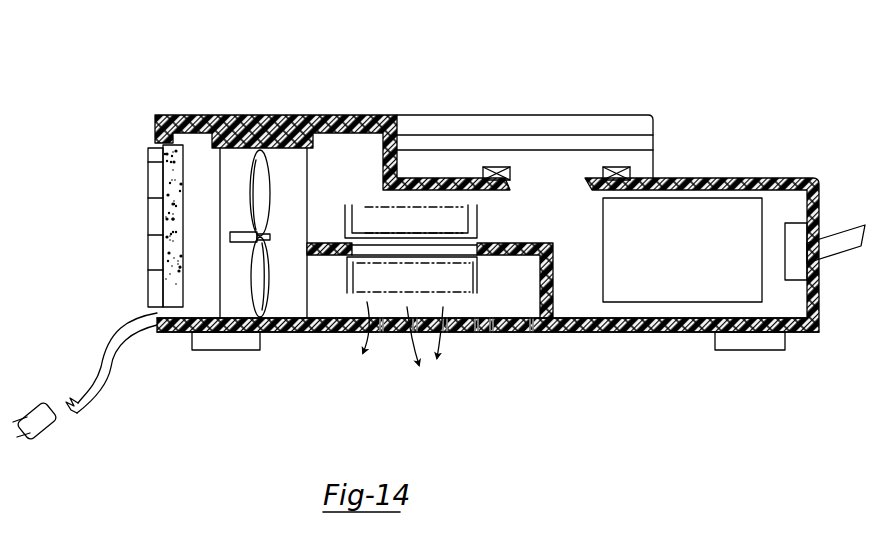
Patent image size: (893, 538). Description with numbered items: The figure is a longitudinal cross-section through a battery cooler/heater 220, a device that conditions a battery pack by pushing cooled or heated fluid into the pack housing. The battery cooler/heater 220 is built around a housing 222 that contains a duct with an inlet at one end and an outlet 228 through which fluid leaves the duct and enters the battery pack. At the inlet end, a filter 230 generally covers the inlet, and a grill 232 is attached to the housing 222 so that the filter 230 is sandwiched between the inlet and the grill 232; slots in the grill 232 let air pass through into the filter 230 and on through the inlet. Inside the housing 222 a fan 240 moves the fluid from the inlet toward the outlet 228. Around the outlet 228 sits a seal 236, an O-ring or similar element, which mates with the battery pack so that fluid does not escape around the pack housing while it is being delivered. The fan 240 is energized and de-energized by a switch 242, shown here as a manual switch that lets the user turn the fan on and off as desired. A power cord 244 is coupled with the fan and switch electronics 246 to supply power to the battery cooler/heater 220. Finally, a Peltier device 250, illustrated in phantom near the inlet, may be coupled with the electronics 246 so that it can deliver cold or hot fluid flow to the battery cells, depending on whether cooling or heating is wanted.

The battery cooler/heater 220 is at (289, 99).
The housing 222 is at (350, 331).
The outlet 228 is at (515, 184).
The filter 230 is at (181, 284).
The grill 232 is at (156, 152).
The seal 236 is at (622, 169).
The fan 240 is at (260, 165).
The switch 242 is at (851, 237).
The power cord 244 is at (91, 370).
The electronics 246 is at (719, 212).
The Peltier device 250 is at (461, 252).